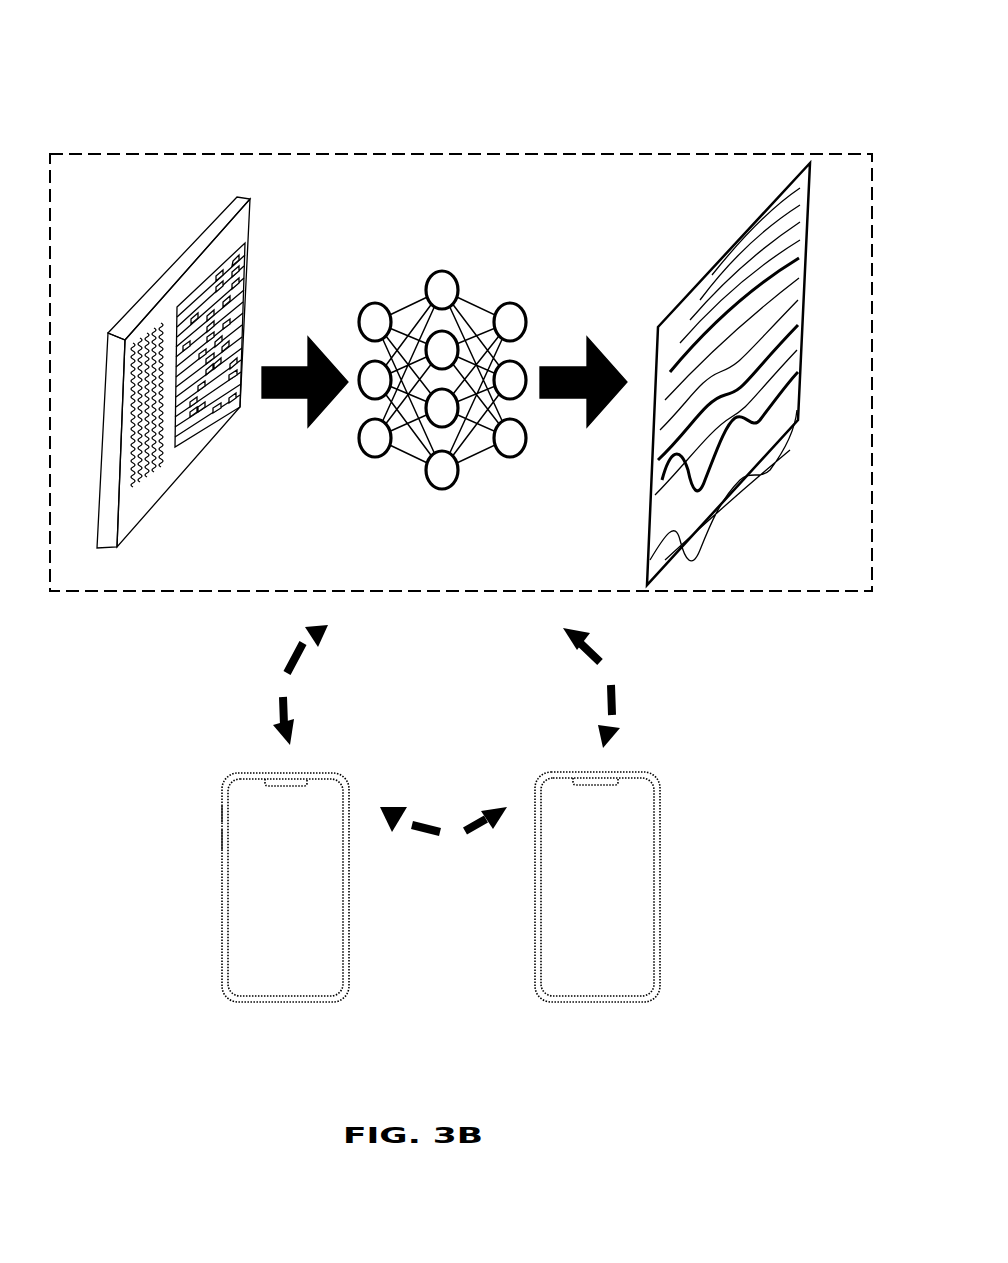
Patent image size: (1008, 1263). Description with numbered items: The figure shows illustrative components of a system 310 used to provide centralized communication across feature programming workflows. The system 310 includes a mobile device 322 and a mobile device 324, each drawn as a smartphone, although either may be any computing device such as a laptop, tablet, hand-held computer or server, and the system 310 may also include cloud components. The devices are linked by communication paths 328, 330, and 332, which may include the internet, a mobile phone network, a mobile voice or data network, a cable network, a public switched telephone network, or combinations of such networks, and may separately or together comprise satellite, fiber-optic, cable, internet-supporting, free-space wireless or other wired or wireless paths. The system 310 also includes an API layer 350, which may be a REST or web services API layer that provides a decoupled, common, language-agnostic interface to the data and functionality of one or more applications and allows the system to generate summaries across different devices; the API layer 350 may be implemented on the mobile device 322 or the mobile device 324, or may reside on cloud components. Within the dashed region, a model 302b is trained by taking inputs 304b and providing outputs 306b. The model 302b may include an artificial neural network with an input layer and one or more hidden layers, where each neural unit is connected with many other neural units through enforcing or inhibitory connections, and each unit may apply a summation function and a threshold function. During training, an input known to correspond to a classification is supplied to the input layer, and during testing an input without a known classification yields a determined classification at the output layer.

The system 310 is at (473, 64).
The API layer 350 is at (565, 130).
The model 302b is at (477, 237).
The inputs 304b is at (176, 495).
The outputs 306b is at (761, 493).
The mobile device 322 is at (202, 866).
The mobile device 324 is at (680, 870).
The communication path 328 is at (262, 670).
The communication path 330 is at (640, 674).
The communication path 332 is at (430, 848).